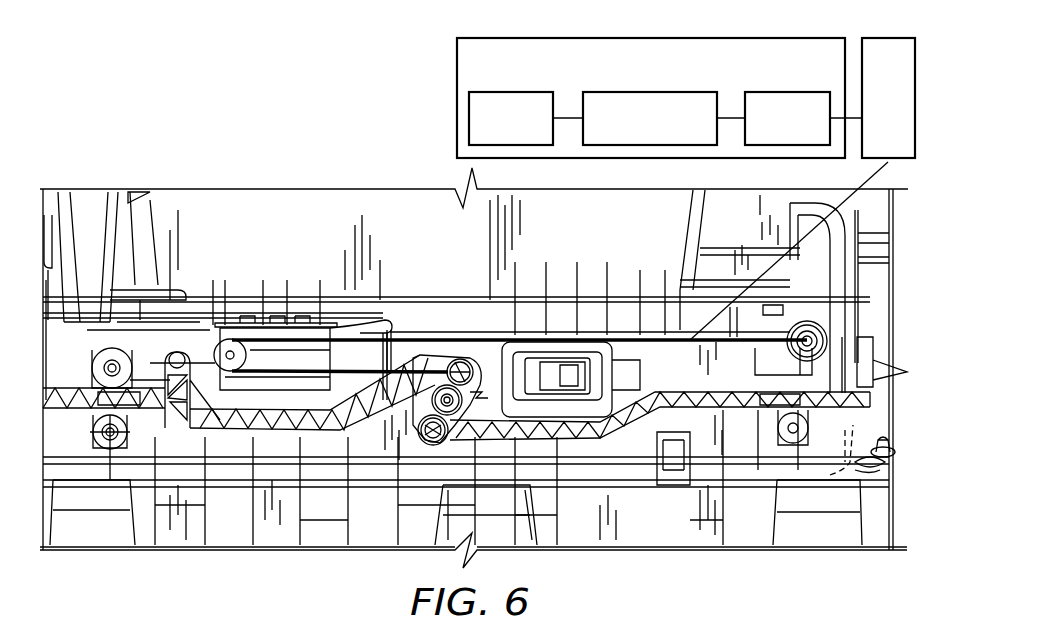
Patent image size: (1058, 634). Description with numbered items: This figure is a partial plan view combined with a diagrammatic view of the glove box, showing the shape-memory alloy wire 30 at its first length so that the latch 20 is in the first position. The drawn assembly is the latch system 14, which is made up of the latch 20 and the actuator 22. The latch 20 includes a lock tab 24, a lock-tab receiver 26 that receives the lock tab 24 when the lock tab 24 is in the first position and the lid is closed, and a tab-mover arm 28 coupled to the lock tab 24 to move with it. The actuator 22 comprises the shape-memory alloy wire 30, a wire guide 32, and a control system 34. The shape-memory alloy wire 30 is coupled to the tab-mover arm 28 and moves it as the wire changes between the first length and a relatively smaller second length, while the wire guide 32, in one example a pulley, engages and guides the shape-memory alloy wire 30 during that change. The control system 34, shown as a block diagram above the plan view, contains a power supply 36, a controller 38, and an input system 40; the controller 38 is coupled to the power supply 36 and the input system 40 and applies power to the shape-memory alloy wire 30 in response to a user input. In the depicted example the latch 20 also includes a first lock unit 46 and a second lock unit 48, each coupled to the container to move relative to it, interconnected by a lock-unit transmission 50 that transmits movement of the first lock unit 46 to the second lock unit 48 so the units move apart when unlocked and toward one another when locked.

The latch system 14 is at (256, 152).
The latch 20 is at (133, 243).
The actuator 22 is at (886, 18).
The lock tab 24 is at (867, 462).
The lock-tab receiver 26 is at (830, 475).
The tab-mover arm 28 is at (247, 429).
The shape-memory alloy wire 30 is at (890, 38).
The wire guide 32 is at (231, 339).
The control system 34 is at (507, 38).
The power supply 36 is at (795, 92).
The controller 38 is at (632, 92).
The input system 40 is at (517, 92).
The first lock unit 46 is at (173, 349).
The second lock unit 48 is at (577, 408).
The lock-unit transmission 50 is at (472, 393).